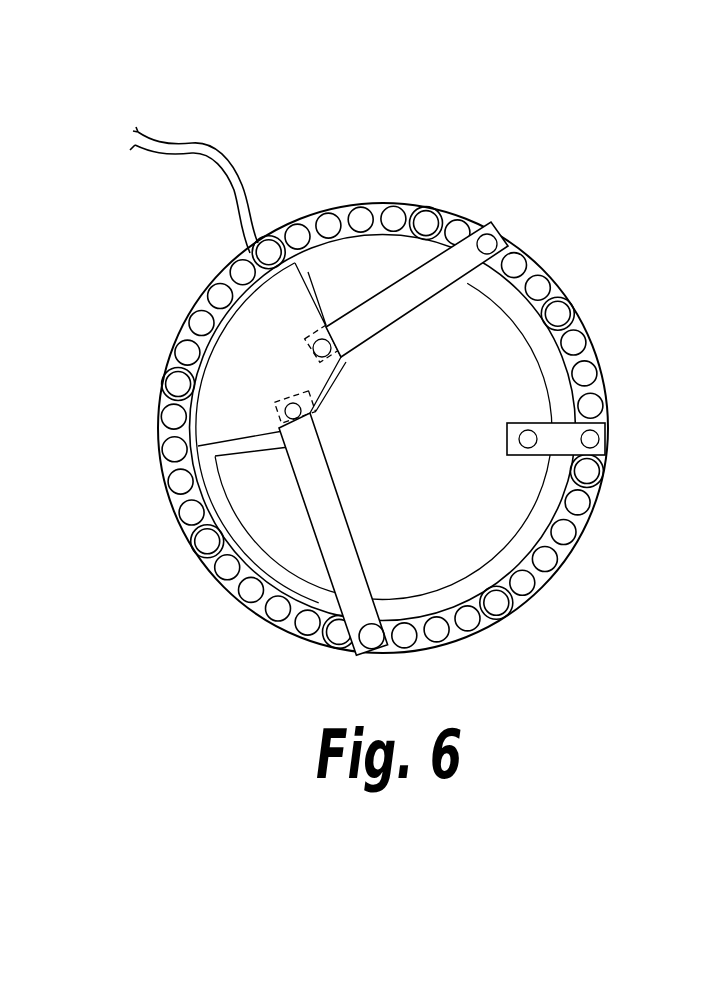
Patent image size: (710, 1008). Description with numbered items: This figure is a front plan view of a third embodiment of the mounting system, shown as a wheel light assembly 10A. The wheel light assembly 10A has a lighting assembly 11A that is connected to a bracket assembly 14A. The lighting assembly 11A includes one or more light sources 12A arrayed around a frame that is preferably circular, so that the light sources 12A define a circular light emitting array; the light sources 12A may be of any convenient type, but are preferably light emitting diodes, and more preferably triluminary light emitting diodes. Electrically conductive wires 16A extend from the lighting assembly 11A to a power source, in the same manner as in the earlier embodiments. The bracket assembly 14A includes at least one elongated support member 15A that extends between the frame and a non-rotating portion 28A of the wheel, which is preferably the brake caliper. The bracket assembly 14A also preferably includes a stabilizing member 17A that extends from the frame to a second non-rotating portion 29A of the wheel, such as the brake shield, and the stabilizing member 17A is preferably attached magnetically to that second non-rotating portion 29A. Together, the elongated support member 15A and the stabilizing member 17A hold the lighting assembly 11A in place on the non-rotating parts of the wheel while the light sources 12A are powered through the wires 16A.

The wheel light assembly 10A is at (193, 647).
The lighting assembly 11A is at (180, 286).
The light sources 12A is at (178, 382).
The bracket assembly 14A is at (366, 486).
The elongated support member 15A is at (327, 453).
The electrically conductive wires 16A is at (185, 144).
The stabilizing member 17A is at (558, 505).
The non-rotating portion of the wheel 28A is at (245, 336).
The second non-rotating portion of the wheel 29A is at (480, 520).